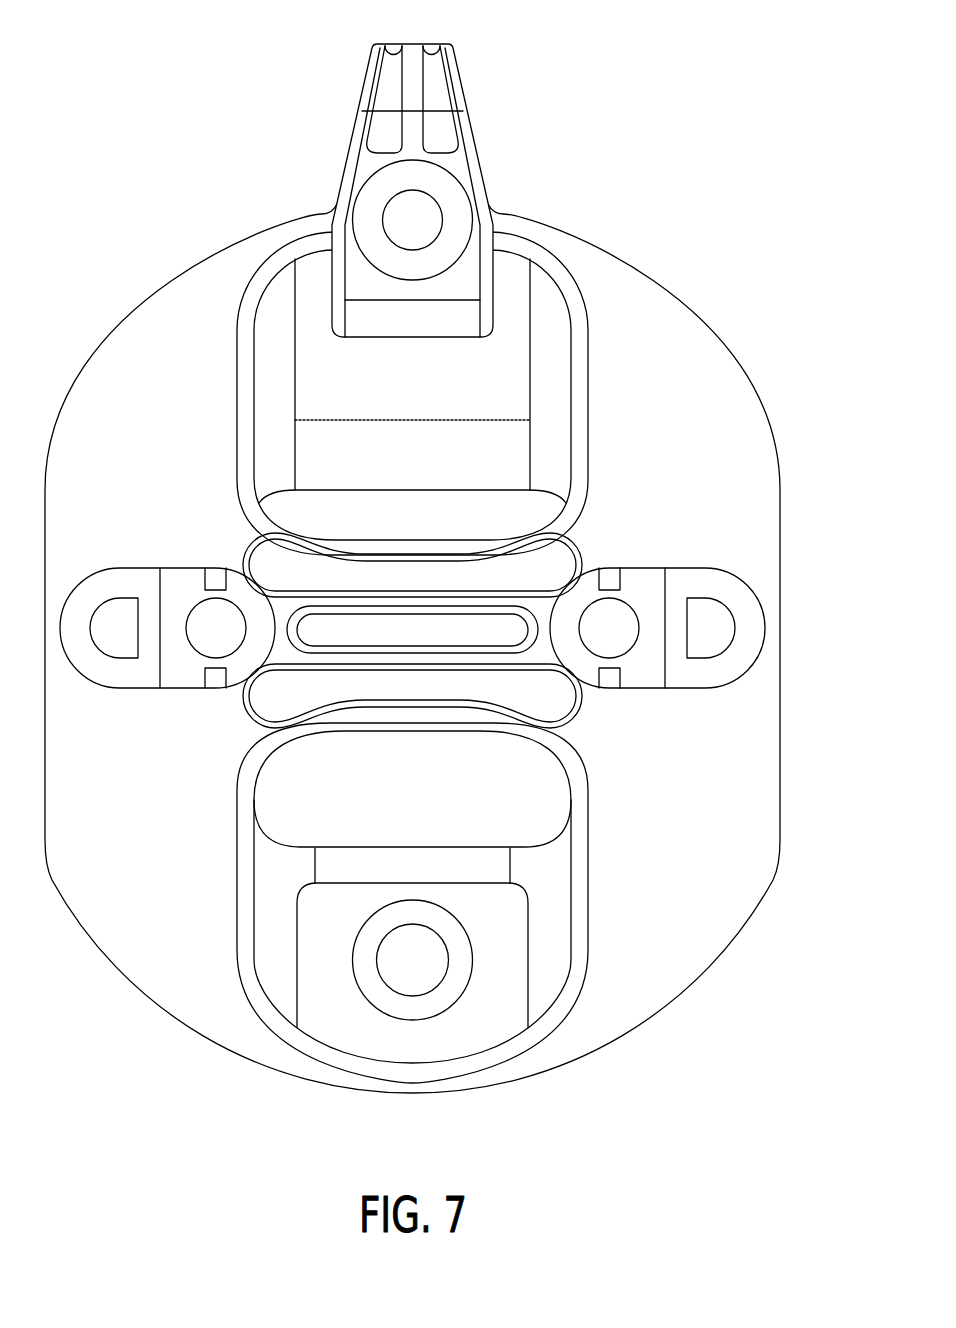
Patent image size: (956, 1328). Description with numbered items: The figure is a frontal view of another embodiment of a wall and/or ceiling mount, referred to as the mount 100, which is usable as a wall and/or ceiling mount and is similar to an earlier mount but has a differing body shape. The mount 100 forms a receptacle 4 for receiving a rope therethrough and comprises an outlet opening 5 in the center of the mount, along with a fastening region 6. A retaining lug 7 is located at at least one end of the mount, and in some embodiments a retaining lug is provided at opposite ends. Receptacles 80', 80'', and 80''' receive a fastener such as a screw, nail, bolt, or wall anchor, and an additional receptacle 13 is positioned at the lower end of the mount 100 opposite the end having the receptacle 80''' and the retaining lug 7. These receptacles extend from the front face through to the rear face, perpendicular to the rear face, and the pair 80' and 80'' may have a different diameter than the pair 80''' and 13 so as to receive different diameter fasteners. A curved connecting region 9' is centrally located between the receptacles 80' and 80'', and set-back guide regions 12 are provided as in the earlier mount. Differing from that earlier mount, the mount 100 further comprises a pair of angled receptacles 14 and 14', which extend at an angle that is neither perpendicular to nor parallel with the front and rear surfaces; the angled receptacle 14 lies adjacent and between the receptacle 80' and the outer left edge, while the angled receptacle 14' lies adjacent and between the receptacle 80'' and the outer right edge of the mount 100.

The mount 100 is at (665, 123).
The fastening region 6 is at (320, 102).
The retaining lug 7 is at (473, 134).
The receptacle 80''' is at (461, 214).
The set-back guide region 12 is at (530, 266).
The outlet opening 5 is at (358, 507).
The angled receptacle 14 is at (167, 602).
The receptacle 80' is at (205, 587).
The angled receptacle 14' is at (689, 626).
The receptacle 80'' is at (641, 666).
The curved connecting region 9' is at (412, 693).
The receptacle 4 is at (370, 752).
The receptacle 13 is at (423, 997).